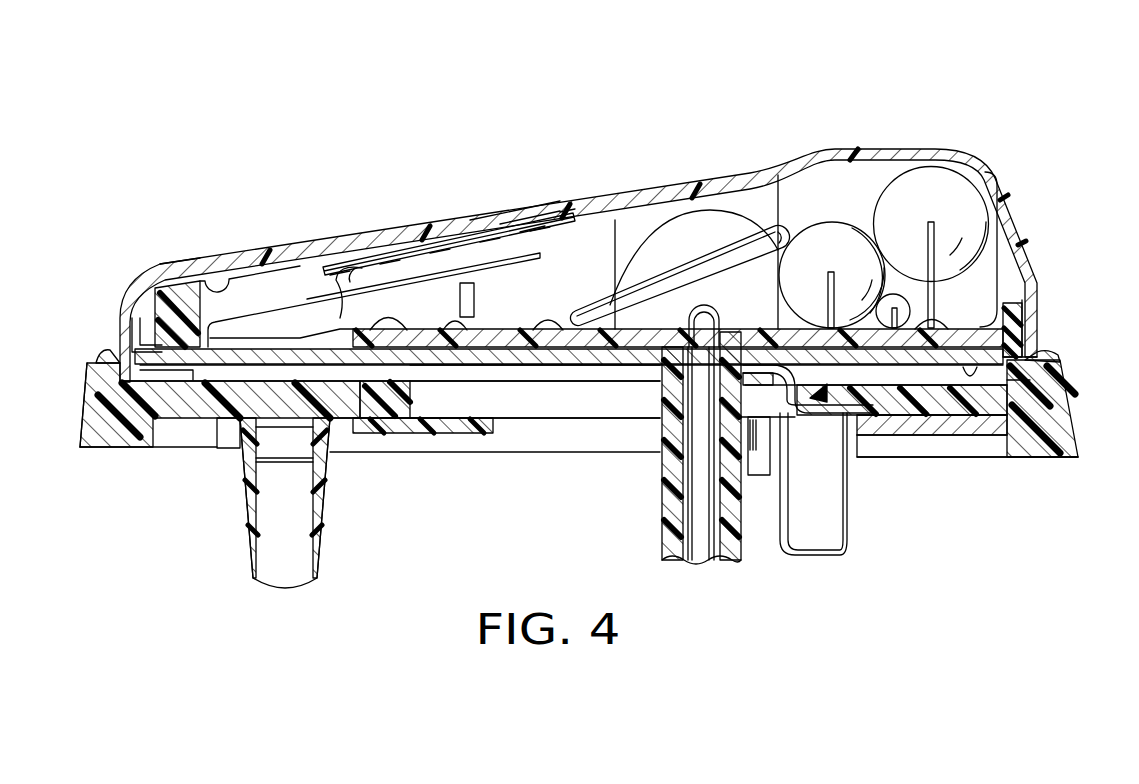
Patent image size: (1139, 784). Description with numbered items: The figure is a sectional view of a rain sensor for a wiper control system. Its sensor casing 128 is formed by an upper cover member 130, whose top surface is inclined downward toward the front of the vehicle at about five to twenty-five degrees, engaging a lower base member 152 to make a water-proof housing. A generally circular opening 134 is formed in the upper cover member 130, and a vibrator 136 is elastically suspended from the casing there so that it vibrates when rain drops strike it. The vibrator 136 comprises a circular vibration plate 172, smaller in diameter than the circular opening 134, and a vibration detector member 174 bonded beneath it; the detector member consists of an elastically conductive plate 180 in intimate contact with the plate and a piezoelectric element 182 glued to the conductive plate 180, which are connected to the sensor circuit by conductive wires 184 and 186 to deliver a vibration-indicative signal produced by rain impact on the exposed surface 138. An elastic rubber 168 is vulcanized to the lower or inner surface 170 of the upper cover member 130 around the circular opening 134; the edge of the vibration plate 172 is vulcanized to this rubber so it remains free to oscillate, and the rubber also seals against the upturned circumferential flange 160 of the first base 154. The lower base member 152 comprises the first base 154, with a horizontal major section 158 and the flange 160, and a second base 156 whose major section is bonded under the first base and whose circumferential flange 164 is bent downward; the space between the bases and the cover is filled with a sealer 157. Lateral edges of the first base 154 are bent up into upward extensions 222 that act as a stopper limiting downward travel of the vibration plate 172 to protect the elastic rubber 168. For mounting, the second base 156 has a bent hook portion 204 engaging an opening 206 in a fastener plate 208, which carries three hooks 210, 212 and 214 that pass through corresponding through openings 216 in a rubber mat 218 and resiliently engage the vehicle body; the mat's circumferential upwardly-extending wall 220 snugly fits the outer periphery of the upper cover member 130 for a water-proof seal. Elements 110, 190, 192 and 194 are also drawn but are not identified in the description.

The base plate 110 is at (897, 452).
The sensor casing 128 is at (944, 148).
The upper cover member 130 is at (857, 150).
The circular opening 134 is at (178, 268).
The vibrator 136 is at (575, 192).
The exposed surface 138 is at (536, 210).
The lower base member 152 is at (582, 374).
The first base 154 is at (291, 346).
The second base 156 is at (445, 367).
The sealer 157 is at (95, 390).
The horizontal major section 158 is at (520, 358).
The circumferential flange 160 is at (133, 323).
The circumferential flange 164 is at (188, 378).
The elastic rubber 168 is at (188, 290).
The lower or inner surface 170 is at (688, 190).
The vibration plate 172 is at (505, 210).
The vibration detector member 174 is at (545, 238).
The elastically conductive plate 180 is at (375, 242).
The piezoelectric element 182 is at (430, 236).
The conductive wire 184 is at (368, 284).
The conductive wire 186 is at (345, 266).
The lever 190 is at (746, 225).
The roller 192 is at (961, 198).
The pinion 194 is at (905, 307).
The bent hook portion 204 is at (780, 452).
The opening 206 is at (808, 395).
The fastener plate 208 is at (365, 410).
The hook 210 is at (300, 580).
The hook 212 is at (758, 475).
The hook 214 is at (868, 508).
The through opening 216 is at (228, 432).
The rubber mat 218 is at (110, 428).
The circumferential upwardly-extending wall 220 is at (98, 357).
The upward extension 222 is at (474, 299).